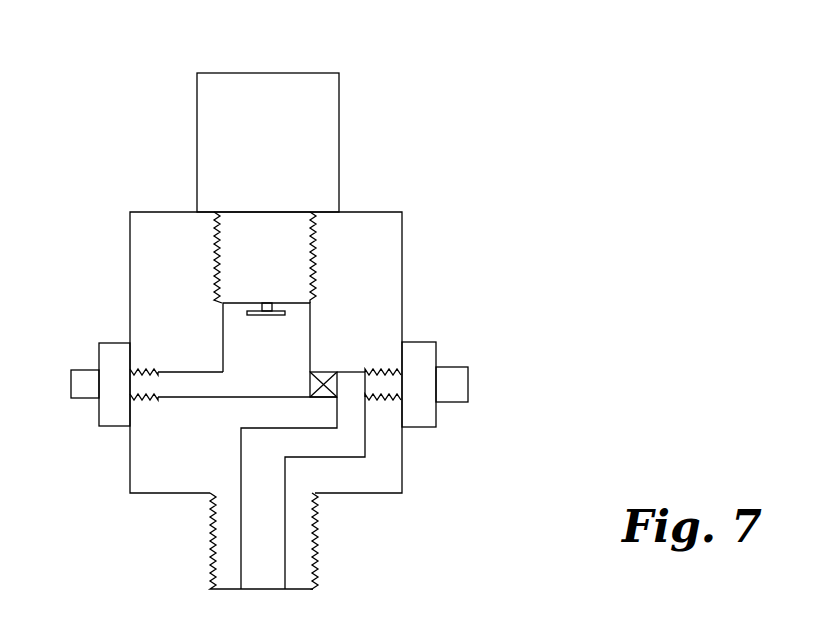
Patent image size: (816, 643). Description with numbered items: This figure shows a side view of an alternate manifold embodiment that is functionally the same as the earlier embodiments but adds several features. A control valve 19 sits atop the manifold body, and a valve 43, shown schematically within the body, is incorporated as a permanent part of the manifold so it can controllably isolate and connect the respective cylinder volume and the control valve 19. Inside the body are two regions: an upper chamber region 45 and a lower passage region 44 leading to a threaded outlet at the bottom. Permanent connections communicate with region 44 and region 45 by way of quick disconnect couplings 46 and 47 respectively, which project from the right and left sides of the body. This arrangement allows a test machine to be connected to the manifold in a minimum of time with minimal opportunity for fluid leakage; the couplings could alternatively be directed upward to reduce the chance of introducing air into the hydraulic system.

The control valve 19 is at (334, 118).
The valve 43 is at (327, 378).
The region 44 is at (235, 542).
The region 45 is at (245, 333).
The quick disconnect coupling 46 is at (436, 365).
The quick disconnect coupling 47 is at (97, 412).